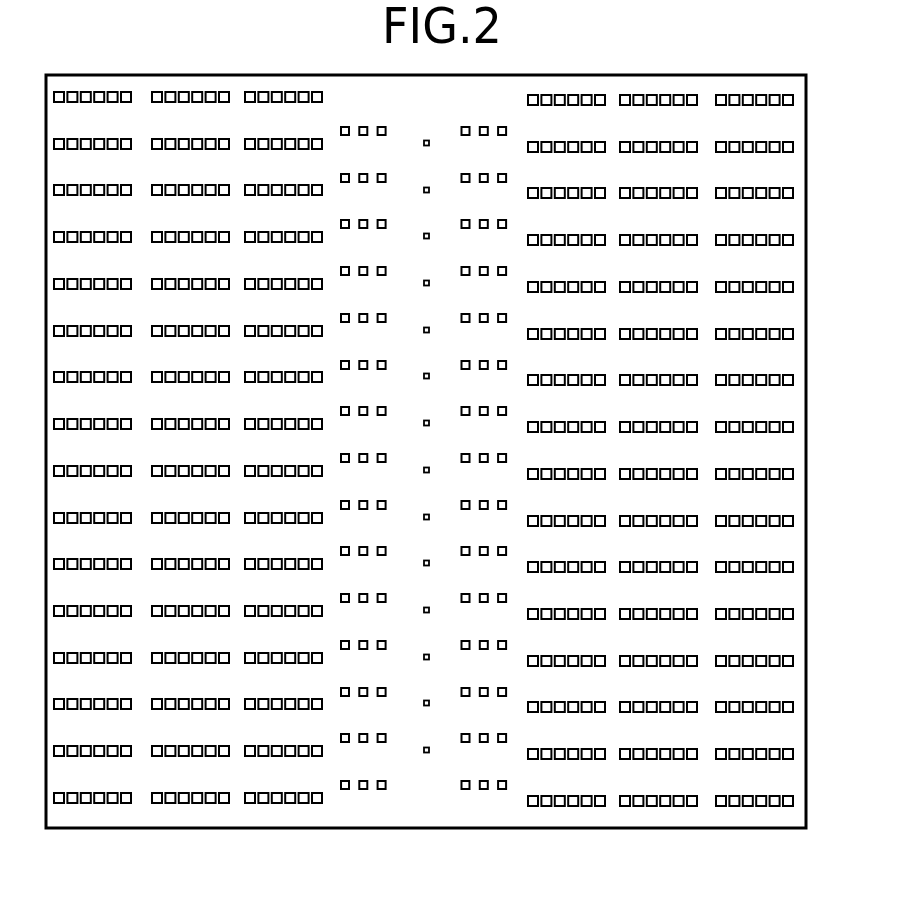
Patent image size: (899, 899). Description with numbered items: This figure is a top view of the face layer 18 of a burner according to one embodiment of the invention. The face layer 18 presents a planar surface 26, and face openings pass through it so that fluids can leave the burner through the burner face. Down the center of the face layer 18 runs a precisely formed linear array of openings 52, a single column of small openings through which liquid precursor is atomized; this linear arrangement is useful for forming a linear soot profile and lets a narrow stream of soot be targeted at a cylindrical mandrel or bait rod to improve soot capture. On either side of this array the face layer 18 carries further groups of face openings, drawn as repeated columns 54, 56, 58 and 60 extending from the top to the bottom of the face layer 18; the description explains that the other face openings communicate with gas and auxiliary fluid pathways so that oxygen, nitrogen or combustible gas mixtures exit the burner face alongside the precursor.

The face layer 18 is at (806, 409).
The planar surface 26 is at (426, 108).
The linear array of openings 52 is at (426, 754).
The three-pad contact columns 54 is at (382, 790).
The inner six-pad contact columns 56 is at (315, 804).
The middle six-pad contact columns 58 is at (220, 804).
The outer six-pad contact columns 60 is at (122, 804).